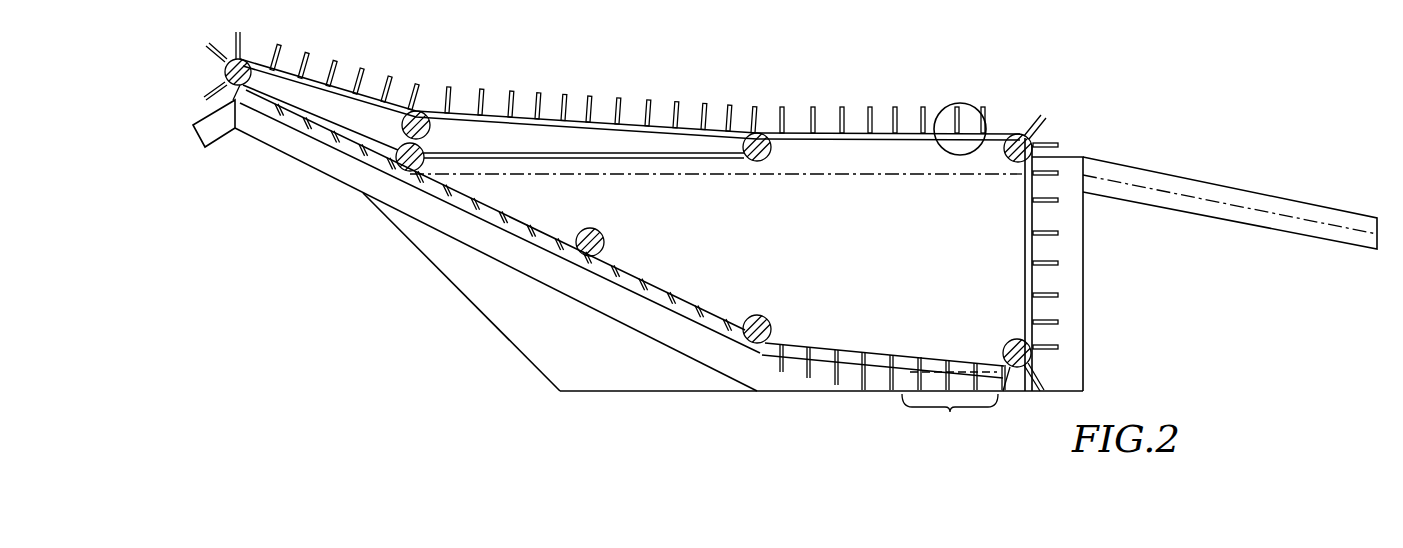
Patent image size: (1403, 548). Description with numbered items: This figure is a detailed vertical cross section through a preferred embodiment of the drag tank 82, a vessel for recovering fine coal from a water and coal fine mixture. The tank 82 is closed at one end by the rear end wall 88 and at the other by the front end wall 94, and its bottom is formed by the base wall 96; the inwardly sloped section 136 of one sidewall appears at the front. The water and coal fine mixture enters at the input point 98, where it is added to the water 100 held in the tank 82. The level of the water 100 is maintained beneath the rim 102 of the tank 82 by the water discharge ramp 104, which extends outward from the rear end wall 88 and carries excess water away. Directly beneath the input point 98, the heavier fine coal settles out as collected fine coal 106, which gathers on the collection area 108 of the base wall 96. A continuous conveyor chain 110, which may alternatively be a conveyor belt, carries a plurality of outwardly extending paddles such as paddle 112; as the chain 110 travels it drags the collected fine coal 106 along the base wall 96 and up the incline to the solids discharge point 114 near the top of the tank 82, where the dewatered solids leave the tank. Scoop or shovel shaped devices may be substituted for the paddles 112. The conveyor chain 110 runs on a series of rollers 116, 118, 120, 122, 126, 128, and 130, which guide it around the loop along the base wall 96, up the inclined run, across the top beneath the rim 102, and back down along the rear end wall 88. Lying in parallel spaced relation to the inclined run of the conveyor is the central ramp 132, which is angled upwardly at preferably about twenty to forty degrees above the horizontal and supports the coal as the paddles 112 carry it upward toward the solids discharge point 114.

The drag tank 82 is at (1107, 264).
The rear end wall 88 is at (1085, 218).
The front end wall 94 is at (421, 252).
The base wall 96 is at (890, 392).
The water and coal fine mixture input point 98 is at (965, 104).
The water 100 is at (722, 174).
The rim 102 is at (572, 152).
The water discharge ramp 104 is at (1288, 199).
The collected fine coal 106 is at (960, 366).
The collection area 108 is at (950, 412).
The continuous conveyor chain 110 is at (642, 281).
The paddle 112 is at (850, 350).
The solids discharge point 114 is at (442, 152).
The roller 116 is at (762, 320).
The roller 118 is at (601, 235).
The roller 120 is at (405, 150).
The roller 122 is at (250, 60).
The roller 126 is at (420, 111).
The roller 128 is at (766, 160).
The roller 130 is at (1026, 136).
The central ramp 132 is at (537, 280).
The inwardly sloped section 136 is at (207, 148).